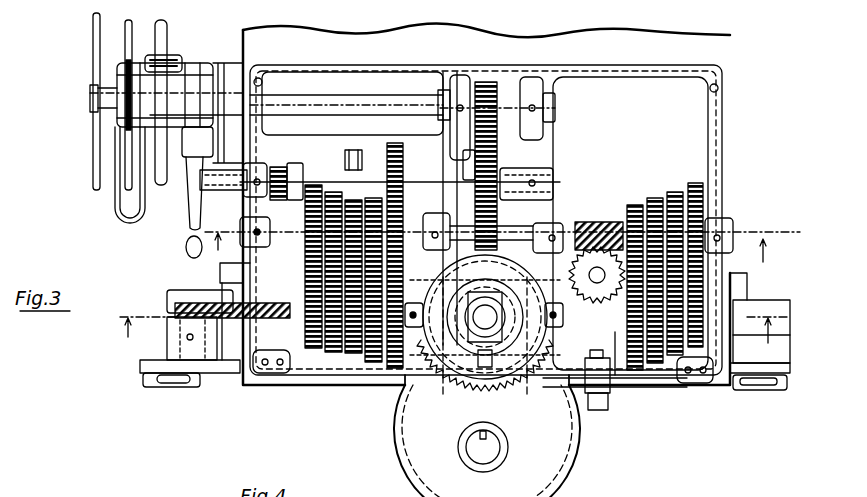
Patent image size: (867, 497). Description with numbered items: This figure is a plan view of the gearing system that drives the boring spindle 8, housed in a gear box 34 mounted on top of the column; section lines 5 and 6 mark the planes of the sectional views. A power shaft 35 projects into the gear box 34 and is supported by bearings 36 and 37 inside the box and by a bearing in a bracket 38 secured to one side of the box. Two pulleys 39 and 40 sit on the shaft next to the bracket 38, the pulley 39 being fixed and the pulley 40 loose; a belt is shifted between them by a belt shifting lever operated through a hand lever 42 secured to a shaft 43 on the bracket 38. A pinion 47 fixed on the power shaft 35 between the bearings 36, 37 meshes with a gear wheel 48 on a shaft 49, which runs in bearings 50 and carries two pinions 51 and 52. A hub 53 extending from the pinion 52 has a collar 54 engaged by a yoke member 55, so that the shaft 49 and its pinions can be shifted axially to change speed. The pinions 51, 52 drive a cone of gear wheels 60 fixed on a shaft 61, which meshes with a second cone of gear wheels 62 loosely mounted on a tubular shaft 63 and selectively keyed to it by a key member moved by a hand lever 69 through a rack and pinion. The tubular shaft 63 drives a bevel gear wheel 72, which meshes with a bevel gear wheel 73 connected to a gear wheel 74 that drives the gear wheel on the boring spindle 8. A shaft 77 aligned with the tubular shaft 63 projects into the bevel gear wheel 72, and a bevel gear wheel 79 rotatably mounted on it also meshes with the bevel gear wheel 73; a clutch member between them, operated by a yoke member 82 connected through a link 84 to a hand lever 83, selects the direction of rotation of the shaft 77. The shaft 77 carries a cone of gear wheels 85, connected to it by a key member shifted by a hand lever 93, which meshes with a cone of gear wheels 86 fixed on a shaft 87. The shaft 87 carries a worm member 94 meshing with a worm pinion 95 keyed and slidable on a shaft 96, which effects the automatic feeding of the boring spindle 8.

The section line 5- 5 is at (455, 339).
The section line 6- 6 is at (497, 250).
The boring spindle 8 is at (488, 455).
The gear box 34 is at (717, 140).
The power shaft 35 is at (88, 100).
The bearing 36 is at (442, 122).
The bearing 37 is at (553, 125).
The bracket 38 is at (219, 63).
The pulley 39 is at (100, 14).
The pulley 40 is at (143, 33).
The hand lever 42 is at (188, 212).
The shaft 43 is at (193, 67).
The pinion 47 is at (487, 82).
The gear wheel 48 is at (493, 233).
The shaft 49 is at (553, 182).
The bearings 50 is at (253, 163).
The pinion 51 is at (280, 167).
The pinion 52 is at (395, 150).
The hub 53 is at (370, 185).
The collar 54 is at (345, 168).
The yoke member 55 is at (345, 160).
The cone of gear wheels 60 is at (302, 250).
The shaft 61 is at (243, 213).
The cone of gear wheels 62 is at (315, 350).
The tubular shaft 63 is at (270, 360).
The hand lever 69 is at (170, 382).
The bevel gear wheel 72 is at (487, 414).
The bevel gear wheel 73 is at (468, 370).
The gear wheel 74 is at (498, 367).
The shaft 77 is at (630, 372).
The bevel gear wheel 79 is at (497, 447).
The yoke member 82 is at (497, 280).
The hand lever 83 is at (603, 392).
The link 84 is at (562, 362).
The cone of gear wheels 85 is at (677, 378).
The cone of gear wheels 86 is at (650, 205).
The shaft 87 is at (732, 228).
The hand lever 93 is at (757, 387).
The worm member 94 is at (600, 226).
The worm pinion 95 is at (615, 332).
The shaft 96 is at (597, 272).